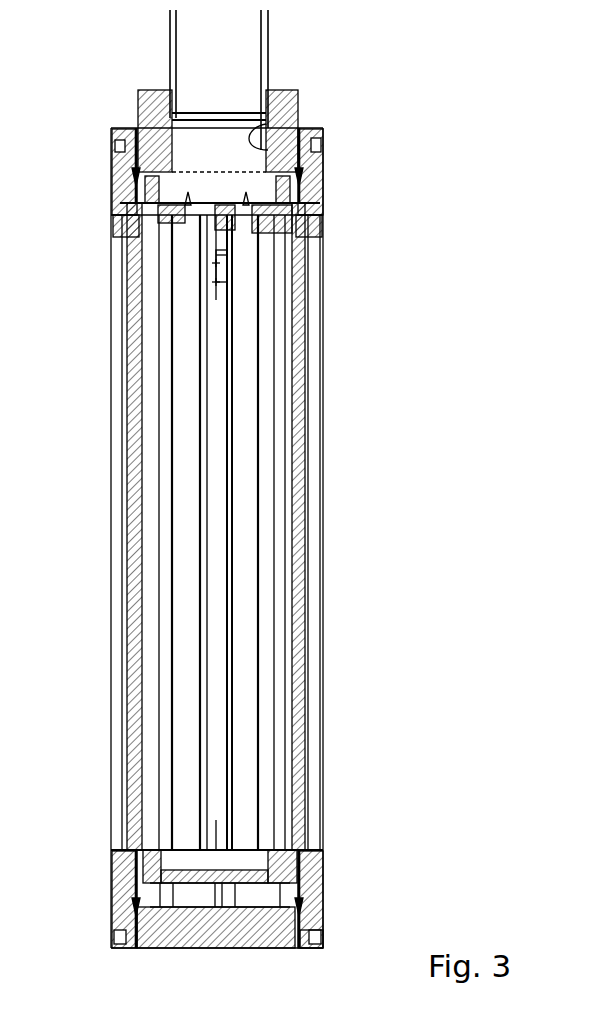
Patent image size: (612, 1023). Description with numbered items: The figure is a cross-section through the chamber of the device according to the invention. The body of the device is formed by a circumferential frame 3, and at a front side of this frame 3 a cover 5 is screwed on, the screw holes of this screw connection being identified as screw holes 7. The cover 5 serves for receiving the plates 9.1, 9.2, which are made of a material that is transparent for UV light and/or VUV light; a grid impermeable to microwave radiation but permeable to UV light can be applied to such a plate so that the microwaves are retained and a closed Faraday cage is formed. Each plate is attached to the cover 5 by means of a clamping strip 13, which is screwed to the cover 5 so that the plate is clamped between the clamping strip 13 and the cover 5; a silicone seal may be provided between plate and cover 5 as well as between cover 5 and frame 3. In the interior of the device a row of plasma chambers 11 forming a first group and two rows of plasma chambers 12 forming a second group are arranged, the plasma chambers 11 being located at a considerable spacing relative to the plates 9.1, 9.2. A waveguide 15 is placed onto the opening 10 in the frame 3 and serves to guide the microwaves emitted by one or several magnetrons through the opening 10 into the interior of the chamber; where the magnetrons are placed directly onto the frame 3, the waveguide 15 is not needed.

The circumferential frame 3 is at (218, 937).
The cover 5 is at (112, 905).
The screw holes 7 is at (323, 942).
The plate 9.1 is at (133, 758).
The plate 9.2 is at (296, 724).
The opening 10 is at (257, 130).
The plasma chambers 11 is at (217, 532).
The plasma chambers 12 is at (250, 452).
The clamping strip 13 is at (118, 226).
The waveguide 15 is at (268, 43).